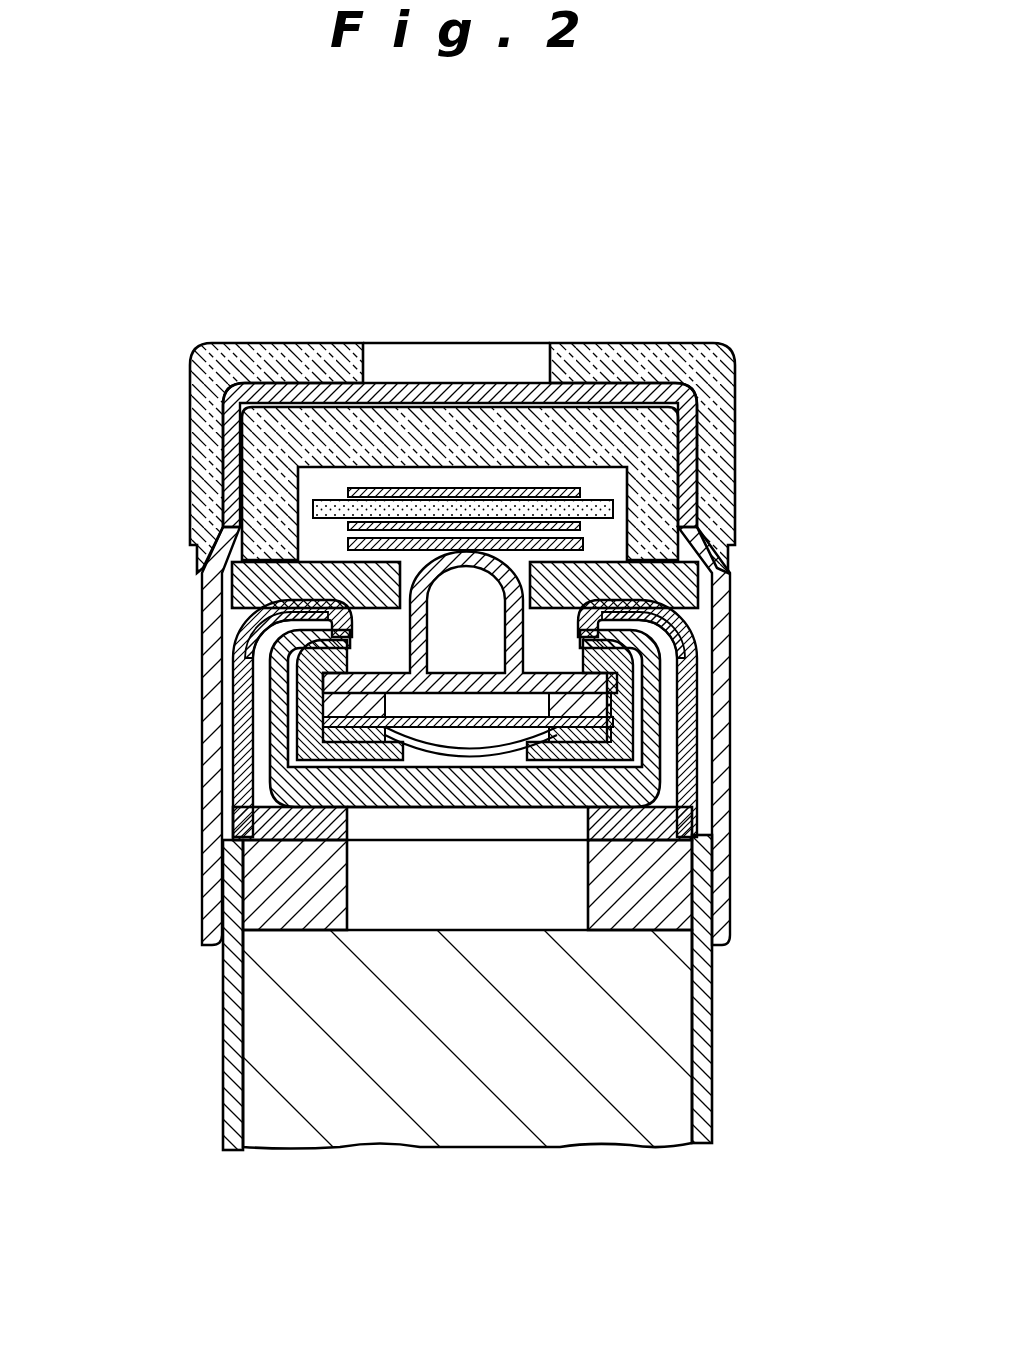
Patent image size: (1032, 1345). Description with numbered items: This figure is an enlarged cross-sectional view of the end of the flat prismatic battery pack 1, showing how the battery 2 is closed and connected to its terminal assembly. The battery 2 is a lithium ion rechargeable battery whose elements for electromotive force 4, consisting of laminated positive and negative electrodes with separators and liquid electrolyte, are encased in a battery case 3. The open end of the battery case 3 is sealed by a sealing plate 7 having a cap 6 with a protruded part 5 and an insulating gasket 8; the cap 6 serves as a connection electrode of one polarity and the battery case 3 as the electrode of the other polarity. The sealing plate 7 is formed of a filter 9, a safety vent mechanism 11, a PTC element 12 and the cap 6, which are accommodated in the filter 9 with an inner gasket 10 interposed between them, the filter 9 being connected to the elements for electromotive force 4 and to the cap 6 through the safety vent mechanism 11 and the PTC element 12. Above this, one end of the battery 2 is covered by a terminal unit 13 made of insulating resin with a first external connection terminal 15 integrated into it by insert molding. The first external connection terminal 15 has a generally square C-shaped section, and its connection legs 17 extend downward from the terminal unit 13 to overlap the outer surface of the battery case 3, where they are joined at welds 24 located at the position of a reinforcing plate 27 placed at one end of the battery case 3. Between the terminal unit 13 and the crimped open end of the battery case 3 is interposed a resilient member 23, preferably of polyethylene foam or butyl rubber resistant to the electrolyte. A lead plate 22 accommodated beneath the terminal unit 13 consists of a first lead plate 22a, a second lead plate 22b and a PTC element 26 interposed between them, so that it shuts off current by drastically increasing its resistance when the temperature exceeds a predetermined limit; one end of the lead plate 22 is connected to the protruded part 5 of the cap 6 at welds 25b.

The battery pack 1 is at (183, 298).
The battery 2 is at (463, 1008).
The battery case 3 is at (228, 1040).
The elements for electromotive force 4 is at (523, 1075).
The protruded part 5 is at (715, 620).
The cap 6 is at (700, 689).
The sealing plate 7 is at (384, 800).
The insulating gasket 8 is at (252, 700).
The filter 9 is at (570, 777).
The inner gasket 10 is at (723, 770).
The safety vent mechanism 11 is at (467, 859).
The PTC element 12 is at (727, 813).
The terminal unit 13 is at (205, 430).
The first external connection terminal 15 is at (466, 393).
The connection legs 17 is at (205, 750).
The lead plate 22 is at (596, 486).
The first lead plate 22a is at (558, 487).
The second lead plate 22b is at (590, 546).
The resilient member 23 is at (715, 586).
The welds 24 is at (243, 885).
The welds 25b is at (456, 556).
The PTC element 26 is at (608, 508).
The reinforcing plate 27 is at (715, 985).